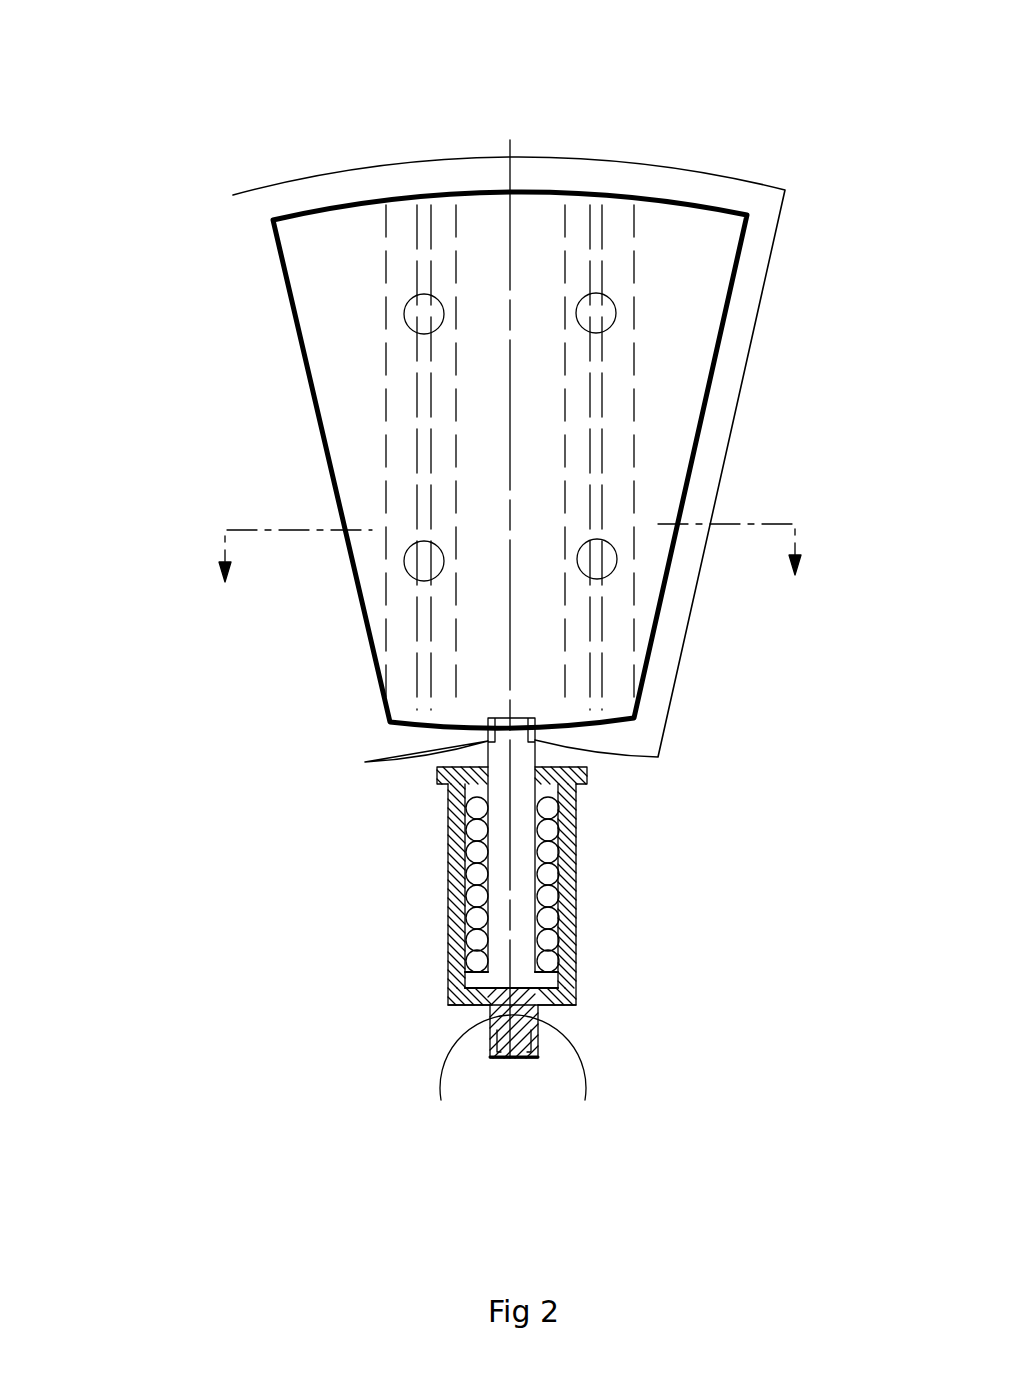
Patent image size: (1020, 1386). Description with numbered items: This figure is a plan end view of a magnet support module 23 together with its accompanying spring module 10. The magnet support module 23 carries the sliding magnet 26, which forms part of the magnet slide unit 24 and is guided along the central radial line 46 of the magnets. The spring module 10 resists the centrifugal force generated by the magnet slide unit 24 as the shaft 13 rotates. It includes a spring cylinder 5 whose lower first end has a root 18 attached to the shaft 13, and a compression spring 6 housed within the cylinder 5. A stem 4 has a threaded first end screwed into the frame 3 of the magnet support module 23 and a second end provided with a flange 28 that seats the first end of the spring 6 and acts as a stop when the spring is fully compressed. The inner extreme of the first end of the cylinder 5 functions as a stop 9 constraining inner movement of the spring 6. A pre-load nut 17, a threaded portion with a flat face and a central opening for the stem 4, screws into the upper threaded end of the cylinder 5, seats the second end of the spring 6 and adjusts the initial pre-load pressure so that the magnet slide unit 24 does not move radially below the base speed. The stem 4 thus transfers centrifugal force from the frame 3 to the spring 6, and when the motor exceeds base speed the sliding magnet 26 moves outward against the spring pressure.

The magnet support module 23 is at (212, 396).
The magnet slide unit 24 is at (619, 243).
The sliding magnet 26 is at (677, 367).
The central radial line 46 is at (509, 262).
The frame 3 is at (847, 438).
The spring module 10 is at (422, 913).
The stem 4 is at (500, 861).
The pre-load nut 17 is at (577, 773).
The spring cylinder 5 is at (577, 913).
The spring 6 is at (552, 960).
The flange 28 is at (533, 984).
The stop 9 is at (482, 1000).
The root 18 is at (527, 1050).
The shaft 13 is at (573, 1084).